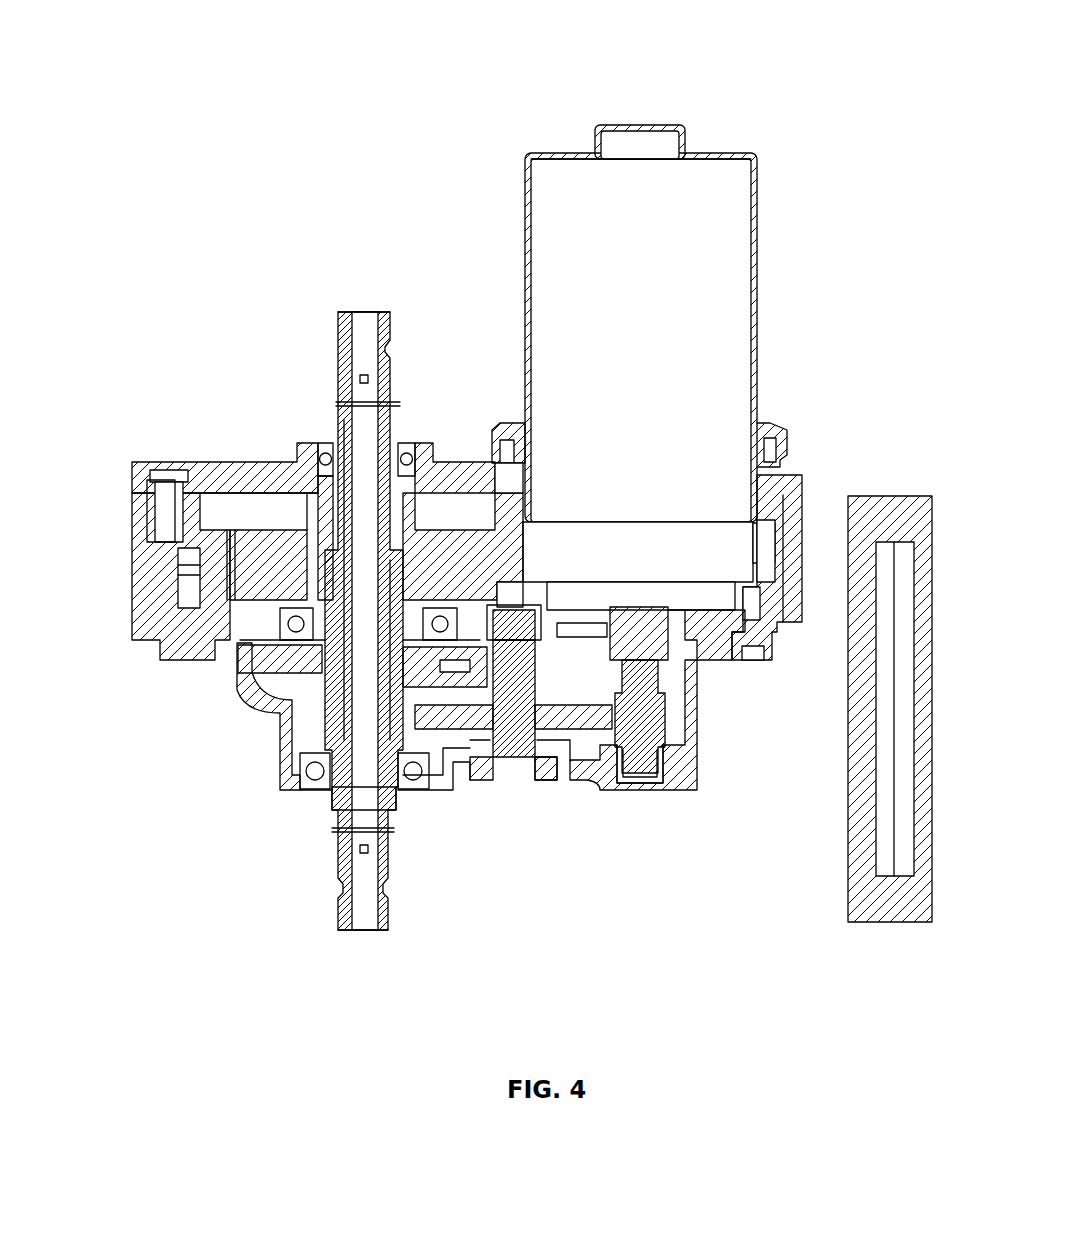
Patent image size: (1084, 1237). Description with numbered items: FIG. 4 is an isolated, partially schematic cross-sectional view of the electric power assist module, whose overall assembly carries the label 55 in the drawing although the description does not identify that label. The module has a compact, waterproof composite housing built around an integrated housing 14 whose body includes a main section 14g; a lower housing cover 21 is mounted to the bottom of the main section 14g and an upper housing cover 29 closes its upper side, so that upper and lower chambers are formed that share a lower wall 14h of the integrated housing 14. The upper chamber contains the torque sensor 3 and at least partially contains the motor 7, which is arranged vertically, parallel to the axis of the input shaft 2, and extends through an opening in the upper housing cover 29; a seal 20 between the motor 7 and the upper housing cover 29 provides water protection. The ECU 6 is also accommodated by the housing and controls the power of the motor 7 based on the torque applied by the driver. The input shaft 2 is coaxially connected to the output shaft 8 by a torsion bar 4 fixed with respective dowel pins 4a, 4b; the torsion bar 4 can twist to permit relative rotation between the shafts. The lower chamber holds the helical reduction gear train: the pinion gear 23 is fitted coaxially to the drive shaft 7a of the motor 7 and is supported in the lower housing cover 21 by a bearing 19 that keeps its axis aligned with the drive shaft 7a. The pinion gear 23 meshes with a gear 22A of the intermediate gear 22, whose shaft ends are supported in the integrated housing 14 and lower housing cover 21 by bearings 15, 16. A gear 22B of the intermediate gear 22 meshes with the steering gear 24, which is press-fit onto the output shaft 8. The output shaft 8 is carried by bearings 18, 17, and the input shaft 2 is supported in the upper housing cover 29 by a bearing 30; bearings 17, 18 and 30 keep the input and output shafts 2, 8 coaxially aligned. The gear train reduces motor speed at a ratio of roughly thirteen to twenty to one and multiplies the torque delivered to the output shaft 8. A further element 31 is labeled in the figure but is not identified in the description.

The input shaft 2 is at (338, 320).
The torque sensor 3 is at (315, 542).
The torsion bar 4 is at (376, 612).
The dowel pin 4a is at (400, 404).
The dowel pin 4b is at (335, 829).
The ECU 6 is at (898, 497).
The motor 7 is at (762, 246).
The drive shaft 7a is at (672, 650).
The output shaft 8 is at (395, 912).
The integrated housing 14 is at (147, 612).
The main section 14g is at (128, 545).
The lower wall 14h is at (523, 597).
The bearing 15 is at (507, 595).
The bearing 16 is at (548, 770).
The bearing 17 is at (316, 782).
The bearing 18 is at (279, 624).
The bearing 19 is at (670, 774).
The seal 20 is at (782, 420).
The lower housing cover 21 is at (441, 706).
The intermediate gear 22 is at (523, 643).
The gear 22A is at (613, 730).
The gear 22B is at (489, 680).
The pinion gear 23 is at (694, 714).
The steering gear 24 is at (256, 674).
The upper housing cover 29 is at (194, 462).
The bearing 30 is at (326, 444).
The boss 31 is at (752, 651).
The drive assembly 55 is at (840, 72).